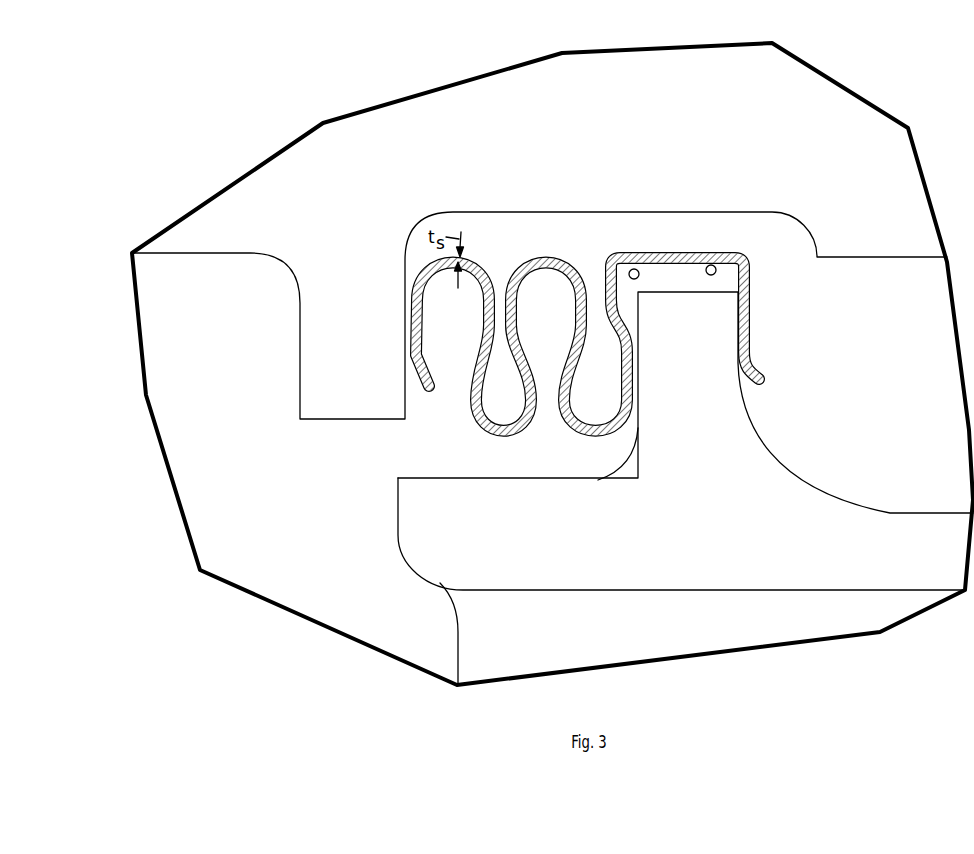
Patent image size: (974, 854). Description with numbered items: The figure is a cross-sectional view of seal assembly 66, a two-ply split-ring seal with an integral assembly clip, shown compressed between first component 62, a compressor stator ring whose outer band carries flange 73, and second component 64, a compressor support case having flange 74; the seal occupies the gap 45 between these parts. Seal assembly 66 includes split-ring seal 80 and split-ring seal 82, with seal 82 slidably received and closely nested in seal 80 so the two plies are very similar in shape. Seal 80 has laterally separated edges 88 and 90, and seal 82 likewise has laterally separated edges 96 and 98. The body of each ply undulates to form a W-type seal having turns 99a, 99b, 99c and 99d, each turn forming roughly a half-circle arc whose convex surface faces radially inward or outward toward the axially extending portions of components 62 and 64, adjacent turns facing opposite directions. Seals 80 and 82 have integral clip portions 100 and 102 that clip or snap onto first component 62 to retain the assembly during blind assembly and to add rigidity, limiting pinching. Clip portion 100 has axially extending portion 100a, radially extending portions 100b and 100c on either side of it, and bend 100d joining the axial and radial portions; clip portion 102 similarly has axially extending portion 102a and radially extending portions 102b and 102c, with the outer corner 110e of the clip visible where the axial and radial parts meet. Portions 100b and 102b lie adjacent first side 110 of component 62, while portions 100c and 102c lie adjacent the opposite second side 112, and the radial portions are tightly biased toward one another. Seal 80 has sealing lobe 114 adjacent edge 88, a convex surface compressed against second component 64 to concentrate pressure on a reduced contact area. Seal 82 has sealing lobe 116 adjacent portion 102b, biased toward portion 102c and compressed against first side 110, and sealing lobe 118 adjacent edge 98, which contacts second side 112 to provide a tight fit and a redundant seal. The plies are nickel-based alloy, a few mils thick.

The gap 45 is at (495, 225).
The first component 62 is at (685, 488).
The second component 64 is at (539, 315).
The seal assembly 66 is at (683, 133).
The flange 73 is at (703, 437).
The flange 74 is at (337, 273).
The split-ring seal 80 is at (528, 246).
The split-ring seal 82 is at (538, 381).
The edge 88 is at (426, 392).
The edge 90 is at (765, 378).
The edge 96 is at (436, 391).
The edge 98 is at (747, 381).
The turn 99a is at (432, 262).
The turn 99b is at (494, 438).
The turn 99c is at (558, 254).
The turn 99d is at (590, 438).
The integral clip portion 100 is at (691, 233).
The axially extending portion 100a is at (711, 252).
The radially extending portion 100b is at (609, 276).
The radially extending portion 100c is at (750, 292).
The bend 100d is at (608, 255).
The integral clip portion 102 is at (668, 279).
The axially extending portion 102a is at (732, 255).
The radially extending portion 102b is at (641, 262).
The radially extending portion 102c is at (731, 333).
The first side 110 is at (638, 428).
The outer corner 110e is at (750, 262).
The second side 112 is at (777, 463).
The sealing lobe 114 is at (396, 355).
The sealing lobe 116 is at (645, 379).
The sealing lobe 118 is at (726, 373).